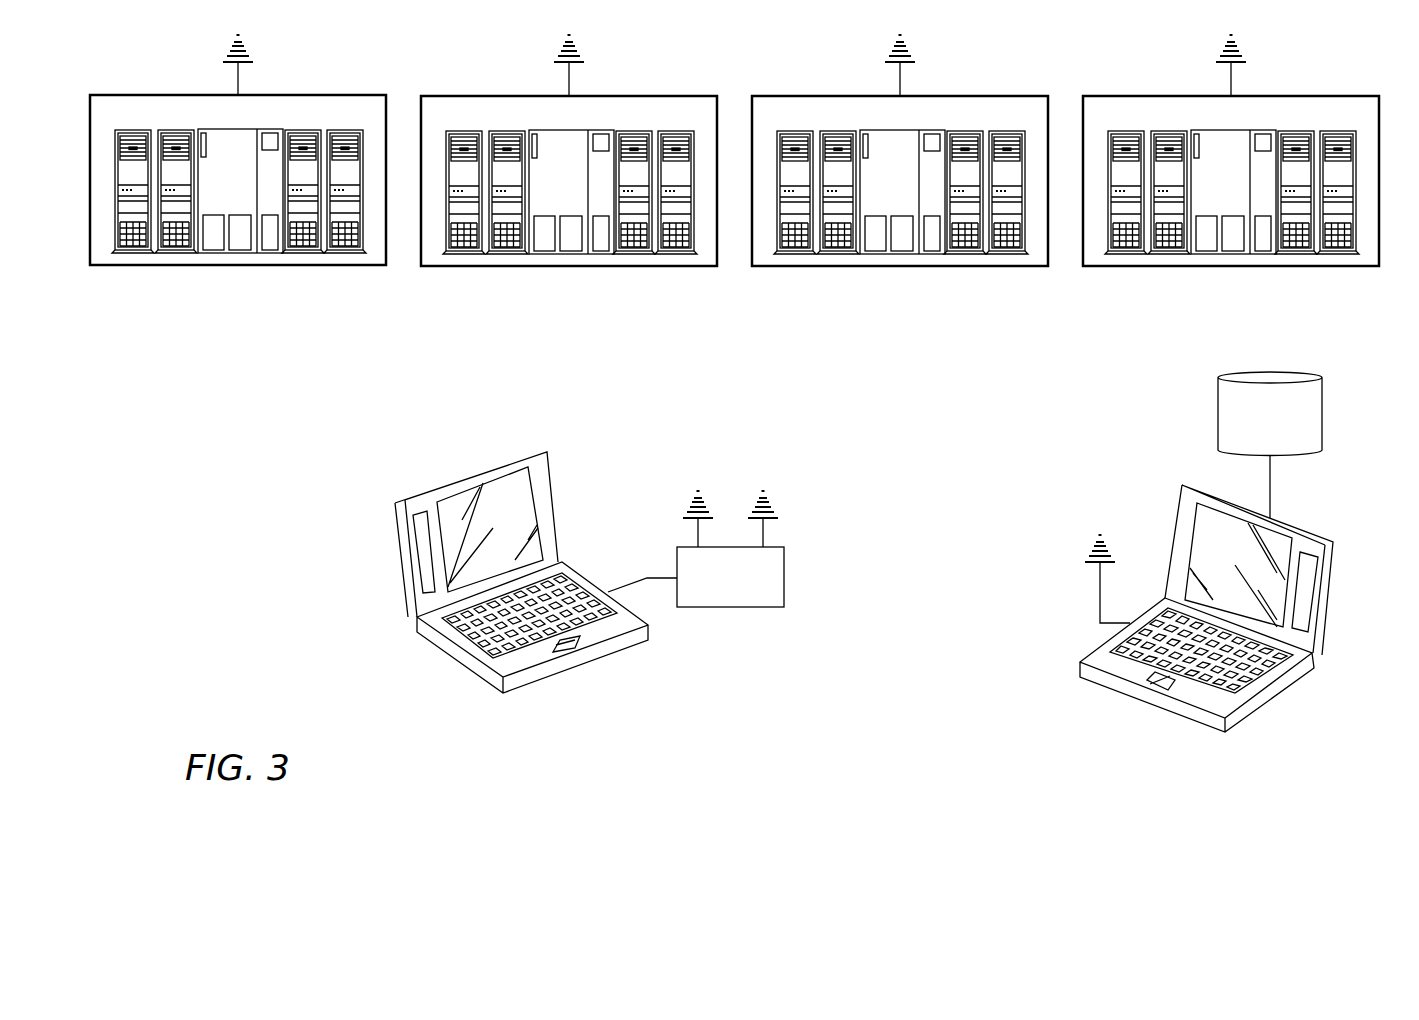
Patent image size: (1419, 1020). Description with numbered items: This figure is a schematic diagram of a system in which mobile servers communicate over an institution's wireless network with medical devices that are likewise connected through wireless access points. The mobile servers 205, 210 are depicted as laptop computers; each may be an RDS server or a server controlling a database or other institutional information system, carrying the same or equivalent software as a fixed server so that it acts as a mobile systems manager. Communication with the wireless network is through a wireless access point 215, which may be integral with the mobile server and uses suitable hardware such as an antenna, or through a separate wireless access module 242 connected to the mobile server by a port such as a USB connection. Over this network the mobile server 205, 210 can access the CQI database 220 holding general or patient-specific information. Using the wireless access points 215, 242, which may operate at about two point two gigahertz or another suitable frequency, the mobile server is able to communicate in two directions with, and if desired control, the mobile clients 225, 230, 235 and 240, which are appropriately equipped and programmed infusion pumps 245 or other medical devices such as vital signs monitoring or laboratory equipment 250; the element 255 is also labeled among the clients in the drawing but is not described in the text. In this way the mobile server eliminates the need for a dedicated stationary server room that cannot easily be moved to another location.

The mobile server 205 is at (398, 562).
The mobile server 210 is at (1328, 598).
The wireless access point 215 is at (238, 80).
The CQI database 220 is at (1218, 411).
The mobile client 225 is at (237, 266).
The mobile client 230 is at (568, 267).
The mobile client 235 is at (899, 267).
The mobile client 240 is at (1231, 195).
The wireless access module 242 is at (784, 597).
The infusion pump 245 is at (1125, 255).
The laboratory equipment 250 is at (1292, 133).
The central server unit 255 is at (1233, 256).